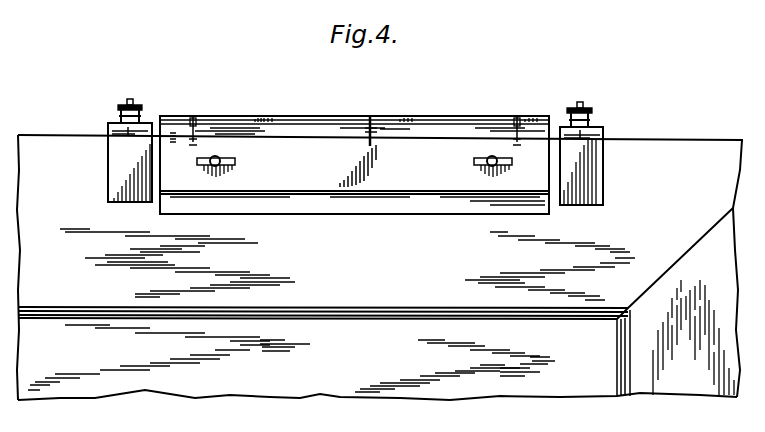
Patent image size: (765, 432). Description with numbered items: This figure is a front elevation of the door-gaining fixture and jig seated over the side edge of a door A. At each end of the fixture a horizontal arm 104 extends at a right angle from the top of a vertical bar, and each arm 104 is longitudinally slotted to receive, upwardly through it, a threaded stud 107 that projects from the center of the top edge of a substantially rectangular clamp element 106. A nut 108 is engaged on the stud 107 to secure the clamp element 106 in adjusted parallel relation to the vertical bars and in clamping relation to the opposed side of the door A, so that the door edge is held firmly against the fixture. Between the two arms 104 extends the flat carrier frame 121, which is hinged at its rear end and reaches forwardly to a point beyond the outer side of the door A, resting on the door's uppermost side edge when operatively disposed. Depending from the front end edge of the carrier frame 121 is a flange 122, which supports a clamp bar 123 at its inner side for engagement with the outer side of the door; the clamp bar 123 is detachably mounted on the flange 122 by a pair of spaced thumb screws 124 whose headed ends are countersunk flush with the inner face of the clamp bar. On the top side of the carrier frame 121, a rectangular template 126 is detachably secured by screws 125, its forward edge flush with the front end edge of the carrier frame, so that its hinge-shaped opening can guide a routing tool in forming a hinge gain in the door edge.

The door A is at (676, 147).
The horizontal arm 104 is at (110, 127).
The clamp element 106 is at (116, 171).
The threaded stud 107 is at (130, 98).
The nut 108 is at (121, 107).
The carrier frame 121 is at (268, 128).
The flange 122 is at (380, 140).
The clamp bar 123 is at (362, 206).
The thumb screw 124 is at (221, 160).
The screw 125 is at (193, 116).
The template 126 is at (327, 116).